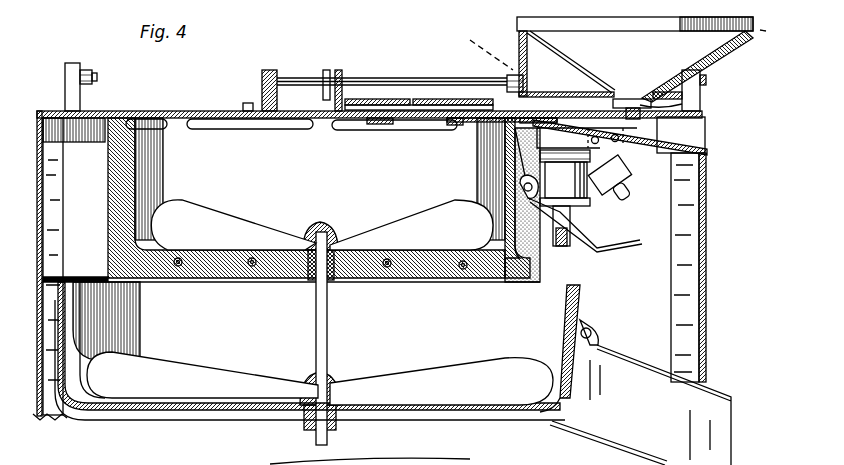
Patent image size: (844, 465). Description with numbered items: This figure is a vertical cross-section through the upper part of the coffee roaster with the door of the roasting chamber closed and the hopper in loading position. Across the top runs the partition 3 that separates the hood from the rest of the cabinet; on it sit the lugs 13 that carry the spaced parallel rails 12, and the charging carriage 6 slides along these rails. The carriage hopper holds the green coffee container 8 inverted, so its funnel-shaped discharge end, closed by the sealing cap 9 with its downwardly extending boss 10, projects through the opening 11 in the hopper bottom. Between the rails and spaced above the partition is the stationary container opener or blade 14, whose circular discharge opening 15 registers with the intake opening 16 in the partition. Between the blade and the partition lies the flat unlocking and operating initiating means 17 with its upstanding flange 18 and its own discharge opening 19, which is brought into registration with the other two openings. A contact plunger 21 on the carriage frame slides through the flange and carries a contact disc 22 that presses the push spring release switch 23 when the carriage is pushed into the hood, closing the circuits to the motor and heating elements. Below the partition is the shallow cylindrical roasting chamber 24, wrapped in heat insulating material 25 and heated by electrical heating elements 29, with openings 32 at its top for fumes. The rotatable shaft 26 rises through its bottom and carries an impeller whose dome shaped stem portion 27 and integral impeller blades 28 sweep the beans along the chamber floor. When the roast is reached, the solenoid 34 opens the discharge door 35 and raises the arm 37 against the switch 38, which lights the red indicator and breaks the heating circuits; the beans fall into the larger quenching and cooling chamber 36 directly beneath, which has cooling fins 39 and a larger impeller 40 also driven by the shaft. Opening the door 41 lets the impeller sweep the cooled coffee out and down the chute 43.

The partition 3 is at (141, 111).
The charging carriage 6 is at (653, 244).
The green coffee container 8 is at (650, 58).
The sealing cap 9 is at (632, 99).
The boss 10 is at (640, 133).
The opening 11 is at (616, 92).
The rails 12 is at (298, 78).
The lugs 13 is at (236, 105).
The container opener 14 is at (468, 99).
The discharge opening 15 is at (388, 99).
The intake opening 16 is at (382, 130).
The unlocking and operating initiating means 17 is at (330, 105).
The upstanding flange 18 is at (339, 72).
The discharge opening 19 is at (452, 124).
The contact plunger 21 is at (430, 82).
The contact disc 22 is at (327, 70).
The push spring release switch 23 is at (98, 76).
The roasting chamber 24 is at (246, 193).
The heat insulating material 25 is at (108, 183).
The rotatable shaft 26 is at (316, 326).
The dome shaped stem portion 27 is at (326, 228).
The impeller blades 28 is at (430, 290).
The electrical heating elements 29 is at (222, 282).
The openings 32 is at (165, 128).
The solenoid 34 is at (565, 198).
The discharge door 35 is at (535, 262).
The quenching and cooling chamber 36 is at (512, 335).
The arm 37 is at (642, 240).
The switch 38 is at (628, 180).
The cooling fins 39 is at (117, 412).
The impeller 40 is at (192, 358).
The door 41 is at (586, 378).
The chute 43 is at (736, 398).